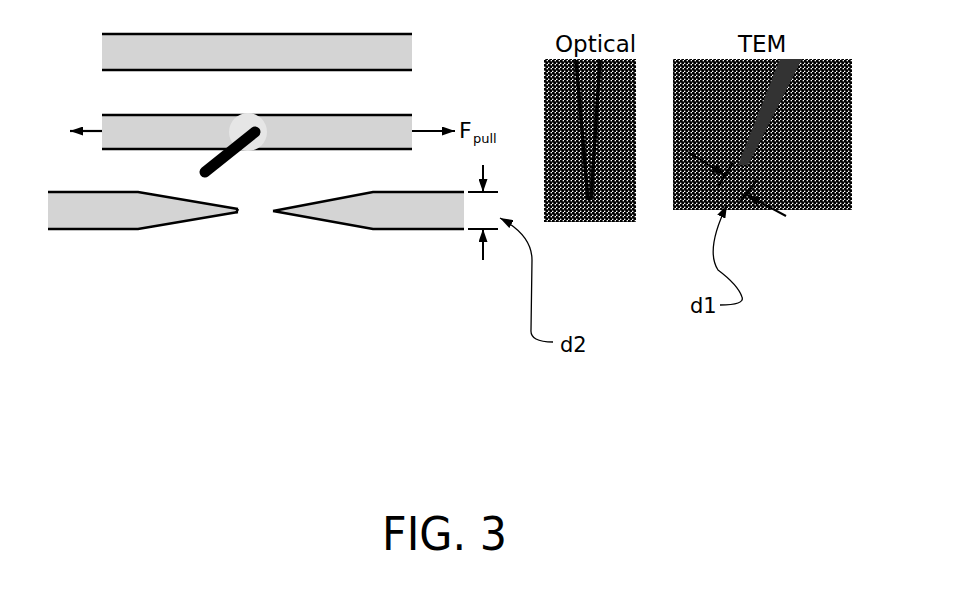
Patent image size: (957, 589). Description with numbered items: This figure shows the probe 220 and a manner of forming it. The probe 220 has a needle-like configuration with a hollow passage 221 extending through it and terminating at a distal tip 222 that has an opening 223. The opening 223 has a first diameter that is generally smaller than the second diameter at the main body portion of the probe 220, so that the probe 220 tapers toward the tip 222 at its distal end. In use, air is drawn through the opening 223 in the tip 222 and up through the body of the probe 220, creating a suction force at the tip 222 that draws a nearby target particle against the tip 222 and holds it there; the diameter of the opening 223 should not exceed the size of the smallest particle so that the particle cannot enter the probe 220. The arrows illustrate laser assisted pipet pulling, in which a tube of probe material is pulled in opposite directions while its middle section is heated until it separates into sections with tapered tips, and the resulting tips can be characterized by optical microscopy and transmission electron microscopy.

The probe 220 is at (356, 220).
The hollow passage 221 is at (96, 229).
The distal tip 222 is at (236, 213).
The opening 223 is at (748, 165).